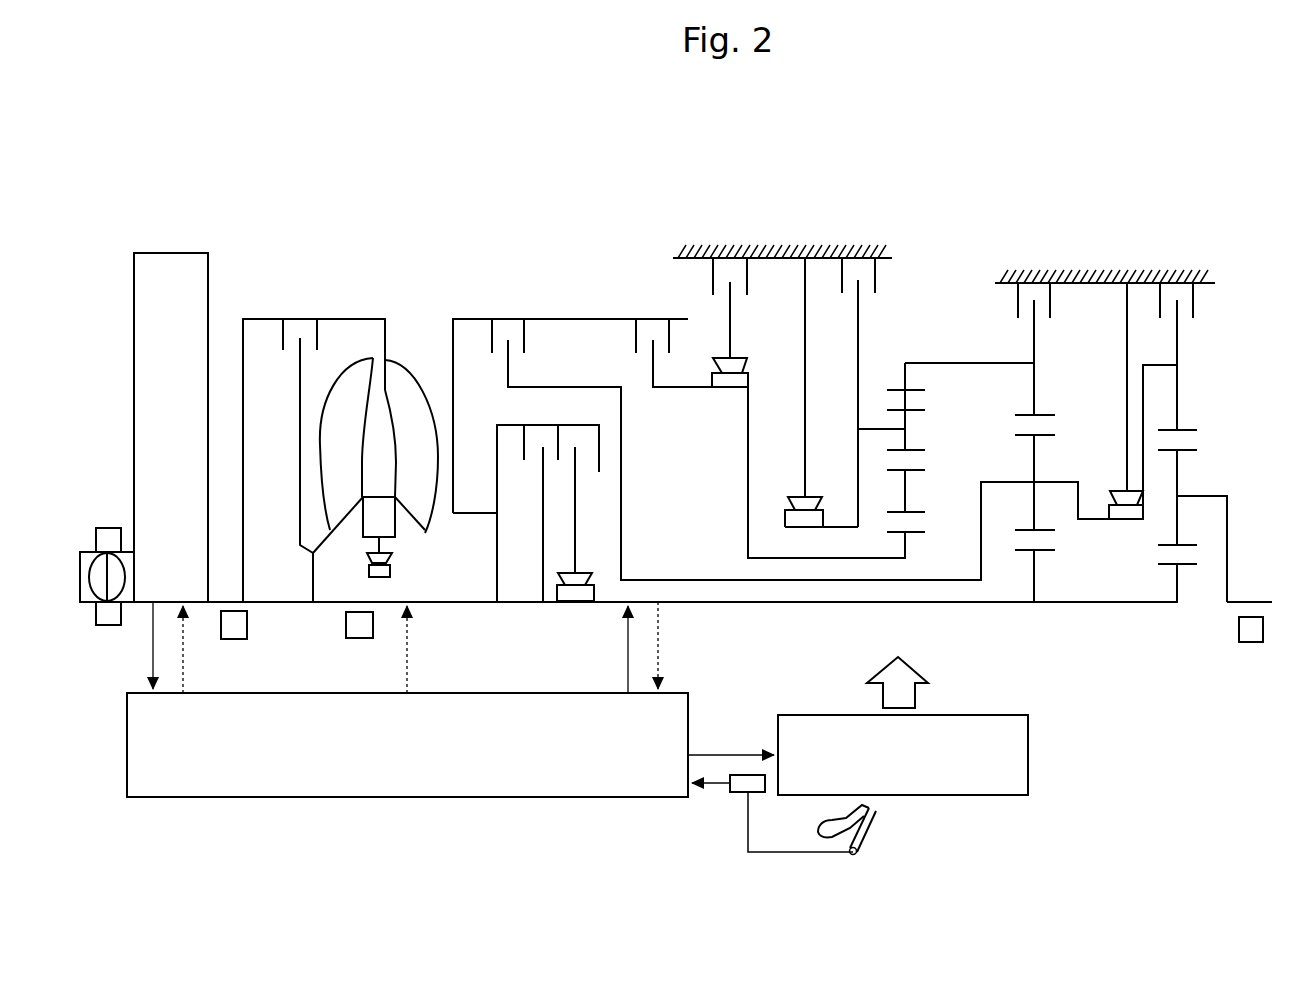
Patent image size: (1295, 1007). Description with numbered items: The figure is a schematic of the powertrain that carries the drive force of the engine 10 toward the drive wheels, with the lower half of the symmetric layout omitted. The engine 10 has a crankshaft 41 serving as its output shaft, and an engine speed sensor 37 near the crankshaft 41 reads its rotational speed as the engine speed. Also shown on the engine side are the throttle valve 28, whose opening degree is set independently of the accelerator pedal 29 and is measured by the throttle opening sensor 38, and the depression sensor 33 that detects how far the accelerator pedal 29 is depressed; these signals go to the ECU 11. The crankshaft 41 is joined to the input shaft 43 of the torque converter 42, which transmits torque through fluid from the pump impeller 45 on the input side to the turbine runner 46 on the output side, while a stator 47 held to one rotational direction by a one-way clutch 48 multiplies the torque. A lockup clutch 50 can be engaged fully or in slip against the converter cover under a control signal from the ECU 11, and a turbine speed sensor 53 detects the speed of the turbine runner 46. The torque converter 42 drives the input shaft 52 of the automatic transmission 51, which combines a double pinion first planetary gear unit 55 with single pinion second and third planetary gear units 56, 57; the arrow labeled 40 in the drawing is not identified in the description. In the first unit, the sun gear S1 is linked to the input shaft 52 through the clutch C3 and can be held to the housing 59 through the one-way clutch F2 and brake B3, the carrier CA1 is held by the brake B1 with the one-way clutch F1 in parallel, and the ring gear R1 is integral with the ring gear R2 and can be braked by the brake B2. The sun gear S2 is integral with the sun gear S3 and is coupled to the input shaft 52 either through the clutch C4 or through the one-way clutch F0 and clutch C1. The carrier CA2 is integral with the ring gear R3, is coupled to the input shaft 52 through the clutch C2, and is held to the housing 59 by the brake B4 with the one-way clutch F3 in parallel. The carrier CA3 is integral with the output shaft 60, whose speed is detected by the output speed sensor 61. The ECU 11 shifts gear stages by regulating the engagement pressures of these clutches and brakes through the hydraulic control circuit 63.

The engine 10 is at (176, 249).
The ECU 11 is at (690, 715).
The throttle valve 28 is at (83, 550).
The accelerator pedal 29 is at (107, 527).
The depression sensor 33 is at (738, 793).
The engine speed sensor 37 is at (248, 622).
The throttle opening sensor 38 is at (106, 626).
The automatic transmission 40 is at (1066, 270).
The crankshaft 41 is at (223, 600).
The torque converter 42 is at (354, 410).
The input shaft 43 is at (242, 340).
The pump impeller 45 is at (430, 510).
The turbine runner 46 is at (330, 455).
The stator 47 is at (363, 522).
The one-way clutch 48 is at (392, 568).
The lockup clutch 50 is at (292, 352).
The automatic transmission 51 is at (959, 218).
The input shaft 52 is at (475, 603).
The turbine speed sensor 53 is at (345, 626).
The first planetary gear unit 55 is at (921, 500).
The second planetary gear unit 56 is at (1046, 496).
The third planetary gear unit 57 is at (1177, 487).
The housing 59 is at (790, 250).
The output shaft 60 is at (1255, 603).
The output speed sensor 61 is at (1251, 643).
The hydraulic control circuit 63 is at (1030, 765).
The clutch C1 is at (586, 455).
The clutch C2 is at (527, 340).
The clutch C3 is at (650, 330).
The clutch C4 is at (528, 460).
The brake B1 is at (846, 275).
The brake B2 is at (1012, 290).
The brake B3 is at (746, 280).
The brake B4 is at (1185, 294).
The one-way clutch F0 is at (570, 605).
The one-way clutch F1 is at (792, 497).
The one-way clutch F2 is at (740, 365).
The one-way clutch F3 is at (1122, 488).
The ring gear R1 is at (896, 390).
The ring gear R2 is at (1020, 412).
The ring gear R3 is at (1188, 424).
The sun gear S1 is at (918, 534).
The sun gear S2 is at (1040, 552).
The sun gear S3 is at (1183, 566).
The carrier CA1 is at (857, 462).
The carrier CA2 is at (1048, 484).
The carrier CA3 is at (1205, 497).